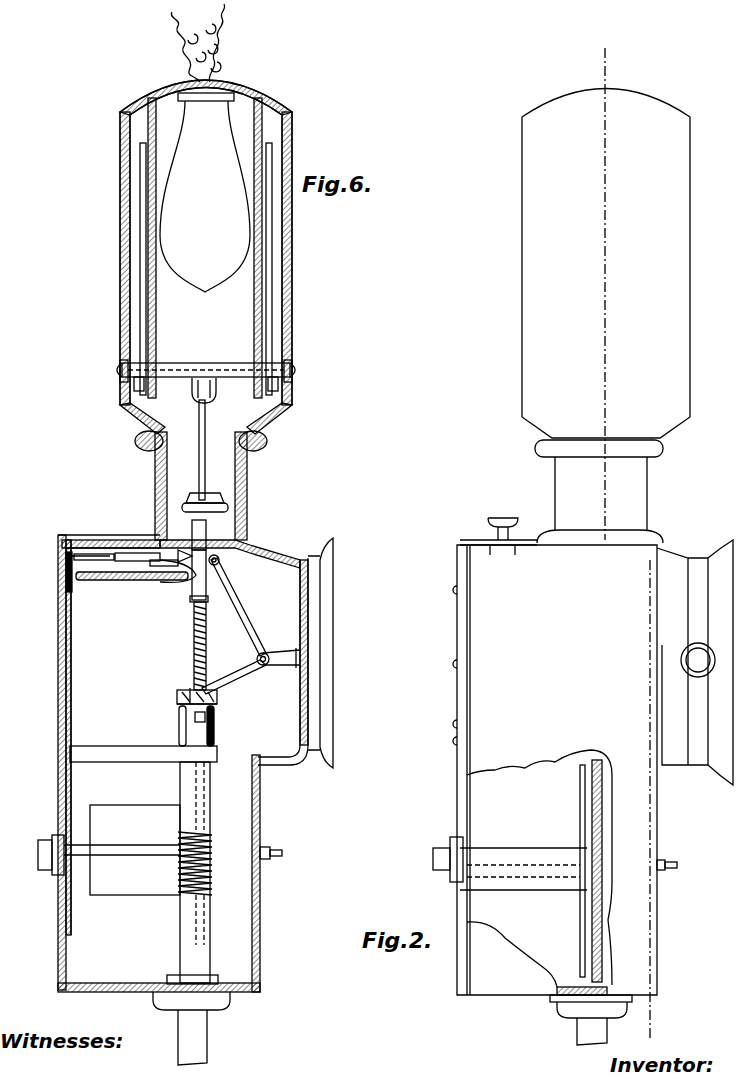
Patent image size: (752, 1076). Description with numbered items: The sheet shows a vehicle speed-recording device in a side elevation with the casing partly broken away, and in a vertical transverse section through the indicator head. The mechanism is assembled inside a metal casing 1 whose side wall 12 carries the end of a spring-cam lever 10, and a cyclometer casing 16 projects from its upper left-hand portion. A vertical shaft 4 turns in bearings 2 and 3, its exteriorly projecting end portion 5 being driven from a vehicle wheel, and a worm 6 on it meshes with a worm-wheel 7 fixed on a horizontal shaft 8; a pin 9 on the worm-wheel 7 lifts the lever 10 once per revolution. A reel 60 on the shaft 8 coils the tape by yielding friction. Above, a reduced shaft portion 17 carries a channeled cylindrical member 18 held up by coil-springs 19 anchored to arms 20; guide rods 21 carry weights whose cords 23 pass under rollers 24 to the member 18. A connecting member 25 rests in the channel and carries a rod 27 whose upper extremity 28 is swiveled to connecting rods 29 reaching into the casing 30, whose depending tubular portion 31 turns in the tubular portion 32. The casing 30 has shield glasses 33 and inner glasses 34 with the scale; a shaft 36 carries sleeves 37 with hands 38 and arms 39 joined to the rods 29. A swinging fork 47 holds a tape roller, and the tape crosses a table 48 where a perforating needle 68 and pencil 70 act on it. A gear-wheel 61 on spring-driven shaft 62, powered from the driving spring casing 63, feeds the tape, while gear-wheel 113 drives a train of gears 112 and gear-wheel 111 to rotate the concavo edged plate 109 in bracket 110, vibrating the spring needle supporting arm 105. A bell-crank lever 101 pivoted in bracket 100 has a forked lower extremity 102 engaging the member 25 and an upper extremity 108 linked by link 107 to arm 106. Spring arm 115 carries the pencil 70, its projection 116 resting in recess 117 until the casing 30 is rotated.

In FIG. 6, the casing 1 is at (262, 912).
In FIG. 2, the casing 1 is at (490, 637).
In FIG. 6, the bearing 2 is at (217, 758).
In FIG. 6, the bearing 3 is at (222, 1005).
In FIG. 2, the bearing 3 is at (570, 1012).
In FIG. 6, the shaft 4 is at (200, 950).
In FIG. 6, the exteriorly projecting end portion 5 is at (196, 1046).
In FIG. 2, the exteriorly projecting end portion 5 is at (585, 1028).
In FIG. 6, the worm 6 is at (212, 877).
In FIG. 2, the worm-wheel 7 is at (580, 822).
In FIG. 2, the shaft 8 is at (612, 883).
In FIG. 2, the pin 9 is at (602, 782).
In FIG. 2, the spring-cam lever 10 is at (627, 539).
In FIG. 2, the side wall 12 is at (490, 706).
In FIG. 2, the cyclometer casing 16 is at (696, 748).
In FIG. 6, the shaft portion 17 is at (192, 600).
In FIG. 6, the channeled cylindrical member 18 is at (176, 694).
In FIG. 6, the coil-springs 19 is at (206, 662).
In FIG. 6, the arms 20 is at (208, 600).
In FIG. 6, the guide rods 21 is at (214, 714).
In FIG. 6, the cords 23 is at (232, 744).
In FIG. 6, the rollers 24 is at (234, 730).
In FIG. 6, the connecting member 25 is at (190, 688).
In FIG. 6, the rod 27 is at (233, 526).
In FIG. 6, the upper extremity 28 is at (228, 508).
In FIG. 6, the connecting rods 29 is at (205, 466).
In FIG. 6, the casing 30 is at (240, 331).
In FIG. 2, the casing 30 is at (548, 318).
In FIG. 6, the depending tubular portion 31 is at (247, 490).
In FIG. 6, the upwardly extending tubular portion 32 is at (155, 482).
In FIG. 2, the upwardly extending tubular portion 32 is at (570, 488).
In FIG. 6, the outer cover or shield glass 33 is at (313, 261).
In FIG. 6, the inner glass 34 is at (252, 313).
In FIG. 6, the shaft 36 is at (292, 385).
In FIG. 6, the sleeves 37 is at (228, 366).
In FIG. 6, the indicator or hand 38 is at (300, 290).
In FIG. 6, the arms 39 is at (214, 395).
In FIG. 2, the swinging fork 47 is at (460, 543).
In FIG. 6, the table 48 is at (126, 580).
In FIG. 2, the reel 60 is at (545, 885).
In FIG. 6, the gear-wheel 61 is at (210, 784).
In FIG. 6, the shaft 62 is at (276, 850).
In FIG. 2, the shaft 62 is at (672, 860).
In FIG. 6, the driving spring casing 63 is at (138, 894).
In FIG. 6, the perforating needle 68 is at (64, 575).
In FIG. 6, the pencil 70 is at (157, 580).
In FIG. 6, the bracket 100 is at (300, 657).
In FIG. 6, the bell-crank lever 101 is at (250, 635).
In FIG. 6, the lower extremity 102 is at (218, 699).
In FIG. 6, the spring needle supporting arm 105 is at (60, 554).
In FIG. 6, the arm 106 is at (110, 540).
In FIG. 6, the link 107 is at (219, 560).
In FIG. 6, the upper extremity 108 is at (240, 592).
In FIG. 6, the concavo edged metal plate 109 is at (80, 553).
In FIG. 6, the bracket 110 is at (180, 580).
In FIG. 6, the gear-wheel 111 is at (62, 536).
In FIG. 6, the train of gears 112 is at (58, 724).
In FIG. 6, the gear-wheel 113 is at (72, 800).
In FIG. 6, the spring arm 115 is at (138, 553).
In FIG. 6, the projection 116 is at (193, 536).
In FIG. 6, the recess 117 is at (180, 556).